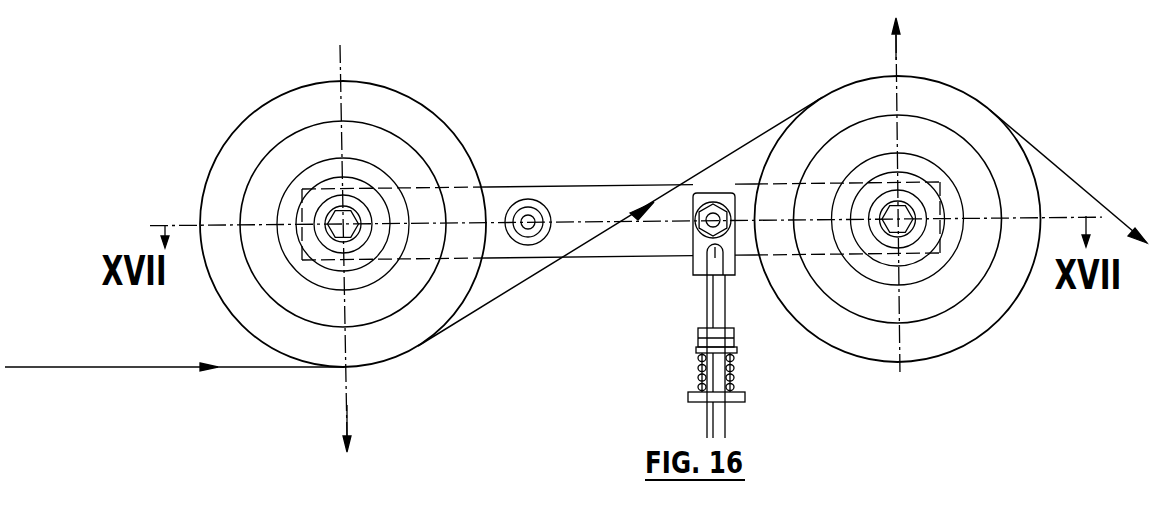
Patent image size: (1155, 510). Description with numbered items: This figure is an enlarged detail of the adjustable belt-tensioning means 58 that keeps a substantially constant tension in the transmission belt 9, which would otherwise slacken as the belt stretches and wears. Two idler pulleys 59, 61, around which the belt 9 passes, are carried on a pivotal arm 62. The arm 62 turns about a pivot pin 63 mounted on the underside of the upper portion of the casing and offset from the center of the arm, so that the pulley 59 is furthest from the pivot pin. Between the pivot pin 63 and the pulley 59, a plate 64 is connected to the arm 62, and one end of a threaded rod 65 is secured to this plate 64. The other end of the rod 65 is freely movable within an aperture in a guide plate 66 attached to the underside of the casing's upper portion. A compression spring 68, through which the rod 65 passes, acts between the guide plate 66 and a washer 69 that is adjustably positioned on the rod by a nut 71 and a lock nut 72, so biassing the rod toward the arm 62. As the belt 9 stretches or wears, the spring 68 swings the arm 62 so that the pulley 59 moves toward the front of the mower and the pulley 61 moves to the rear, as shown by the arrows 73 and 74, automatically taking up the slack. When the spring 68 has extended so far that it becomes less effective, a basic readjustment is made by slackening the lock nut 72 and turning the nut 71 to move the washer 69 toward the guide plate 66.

The transmission belt 9 is at (516, 292).
The belt-tensioning means 58 is at (578, 397).
The idler pulley 59 is at (990, 317).
The idler pulley 61 is at (227, 150).
The pivotal arm 62 is at (622, 188).
The pivot pin 63 is at (521, 216).
The plate 64 is at (699, 267).
The threaded rod 65 is at (706, 303).
The guide plate 66 is at (745, 401).
The compression spring 68 is at (733, 370).
The washer 69 is at (738, 355).
The nut 71 is at (697, 351).
The lock nut 72 is at (700, 333).
The arrow 73 is at (898, 57).
The arrow 74 is at (350, 425).